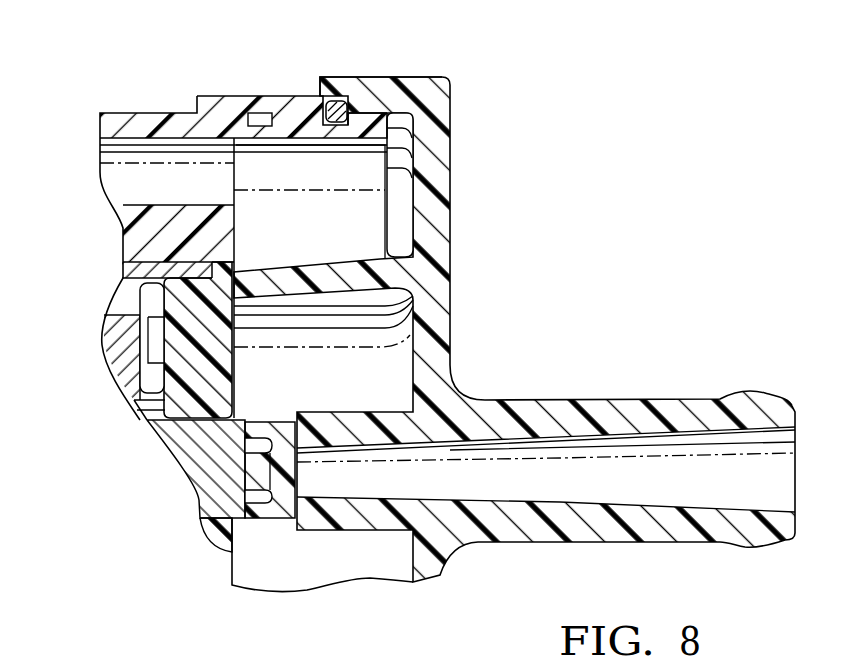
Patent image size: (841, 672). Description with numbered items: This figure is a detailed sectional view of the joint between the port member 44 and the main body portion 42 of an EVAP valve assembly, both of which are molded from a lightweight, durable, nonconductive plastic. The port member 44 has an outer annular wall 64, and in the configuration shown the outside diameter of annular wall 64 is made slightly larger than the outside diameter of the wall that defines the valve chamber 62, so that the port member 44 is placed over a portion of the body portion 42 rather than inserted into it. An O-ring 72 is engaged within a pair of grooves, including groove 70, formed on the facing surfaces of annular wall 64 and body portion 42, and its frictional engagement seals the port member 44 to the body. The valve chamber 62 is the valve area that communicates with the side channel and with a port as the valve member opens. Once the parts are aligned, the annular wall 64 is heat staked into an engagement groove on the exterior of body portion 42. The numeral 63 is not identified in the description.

The main body portion 42 is at (131, 113).
The port member 44 is at (636, 401).
The valve chamber 62 is at (345, 221).
The flange portion 63 is at (290, 95).
The outer annular wall 64 is at (348, 84).
The groove 70 is at (347, 108).
The O-ring 72 is at (342, 107).